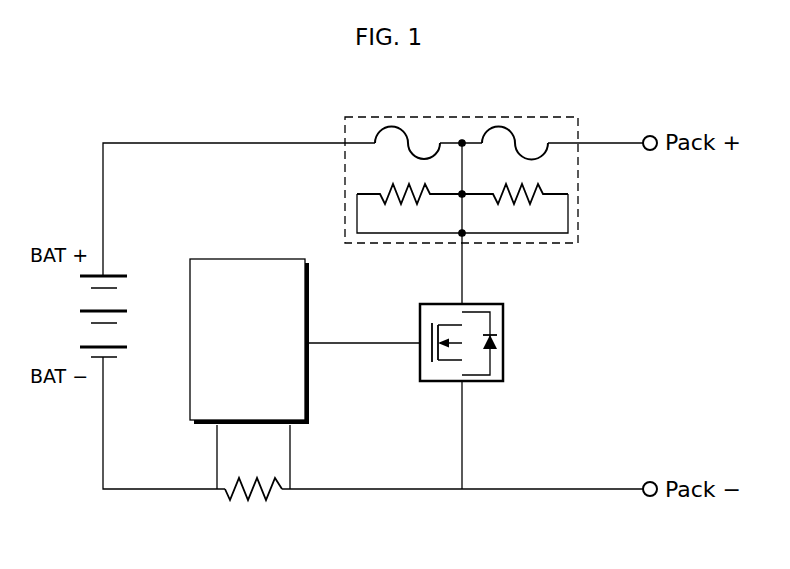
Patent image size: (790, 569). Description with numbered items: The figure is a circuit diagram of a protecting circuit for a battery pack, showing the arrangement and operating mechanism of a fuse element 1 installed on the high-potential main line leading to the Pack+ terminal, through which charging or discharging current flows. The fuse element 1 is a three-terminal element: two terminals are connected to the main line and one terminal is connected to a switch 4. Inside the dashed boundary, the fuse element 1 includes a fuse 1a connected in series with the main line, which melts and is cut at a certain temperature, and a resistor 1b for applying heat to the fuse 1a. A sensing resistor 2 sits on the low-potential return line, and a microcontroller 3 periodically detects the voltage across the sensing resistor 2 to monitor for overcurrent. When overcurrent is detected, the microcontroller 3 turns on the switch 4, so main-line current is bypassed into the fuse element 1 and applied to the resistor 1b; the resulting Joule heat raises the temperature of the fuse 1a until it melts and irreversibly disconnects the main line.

The fuse element 1 is at (461, 179).
The fuse 1a is at (392, 127).
The resistor 1b is at (398, 202).
The sensing resistor 2 is at (250, 501).
The microcontroller 3 is at (248, 258).
The switch 4 is at (503, 343).